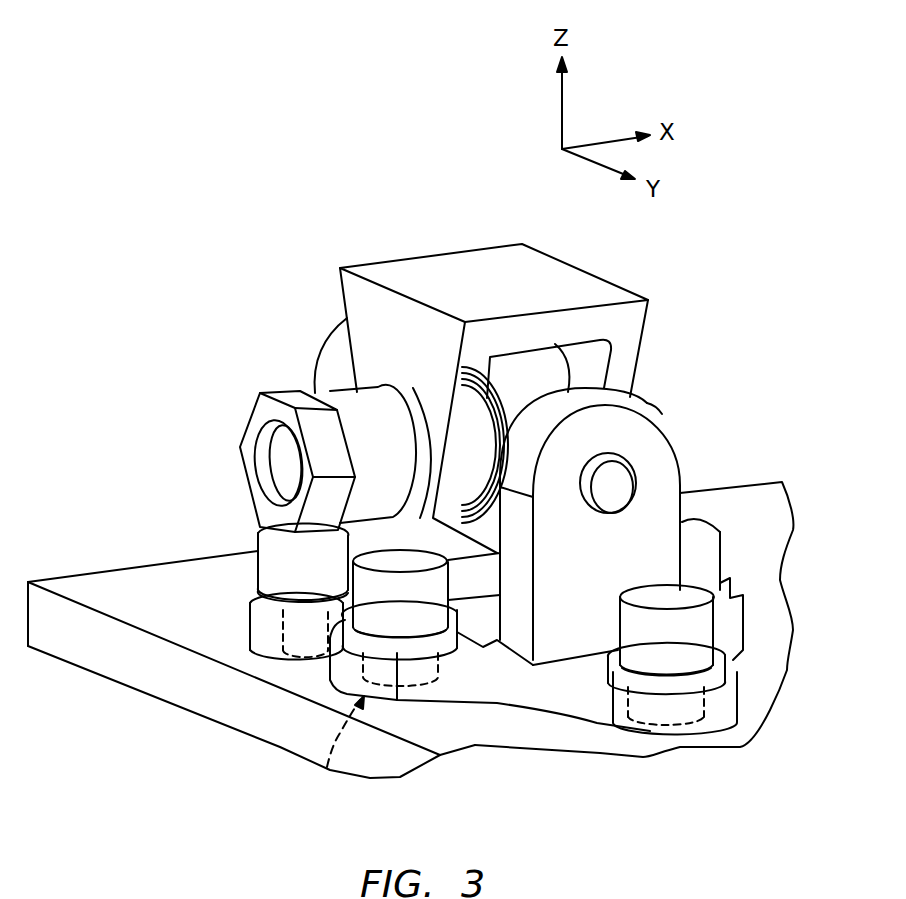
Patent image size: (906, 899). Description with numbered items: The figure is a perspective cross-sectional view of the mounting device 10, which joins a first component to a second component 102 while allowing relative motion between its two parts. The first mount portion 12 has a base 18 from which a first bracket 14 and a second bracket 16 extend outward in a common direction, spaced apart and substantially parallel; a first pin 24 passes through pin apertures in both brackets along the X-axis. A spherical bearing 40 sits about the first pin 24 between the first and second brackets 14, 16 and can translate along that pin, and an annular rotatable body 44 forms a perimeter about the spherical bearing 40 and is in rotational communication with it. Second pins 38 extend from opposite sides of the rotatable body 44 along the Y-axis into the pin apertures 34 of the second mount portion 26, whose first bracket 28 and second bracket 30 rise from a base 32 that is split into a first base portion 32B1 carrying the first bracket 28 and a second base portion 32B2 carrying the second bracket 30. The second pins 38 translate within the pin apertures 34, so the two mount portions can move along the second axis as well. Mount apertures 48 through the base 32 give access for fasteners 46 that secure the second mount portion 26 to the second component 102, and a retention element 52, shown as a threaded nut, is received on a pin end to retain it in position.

The mounting device 10 is at (664, 235).
The first mount portion 12 is at (660, 313).
The first bracket 14 is at (392, 313).
The second bracket 16 is at (623, 362).
The base 18 is at (587, 317).
The first pin 24 is at (653, 398).
The second mount portion 26 is at (233, 628).
The first bracket 28 is at (337, 363).
The second bracket 30 is at (660, 457).
The base 32 is at (243, 557).
The first base portion 32B1 is at (257, 548).
The second base portion 32B2 is at (720, 710).
The pin aperture 34 is at (583, 509).
The second pins 38 is at (608, 497).
The spherical bearing 40 is at (483, 421).
The rotatable body 44 is at (535, 367).
The fasteners 46 is at (383, 605).
The mount apertures 48 is at (327, 767).
The retention elements 52 is at (258, 404).
The second component 102 is at (772, 542).